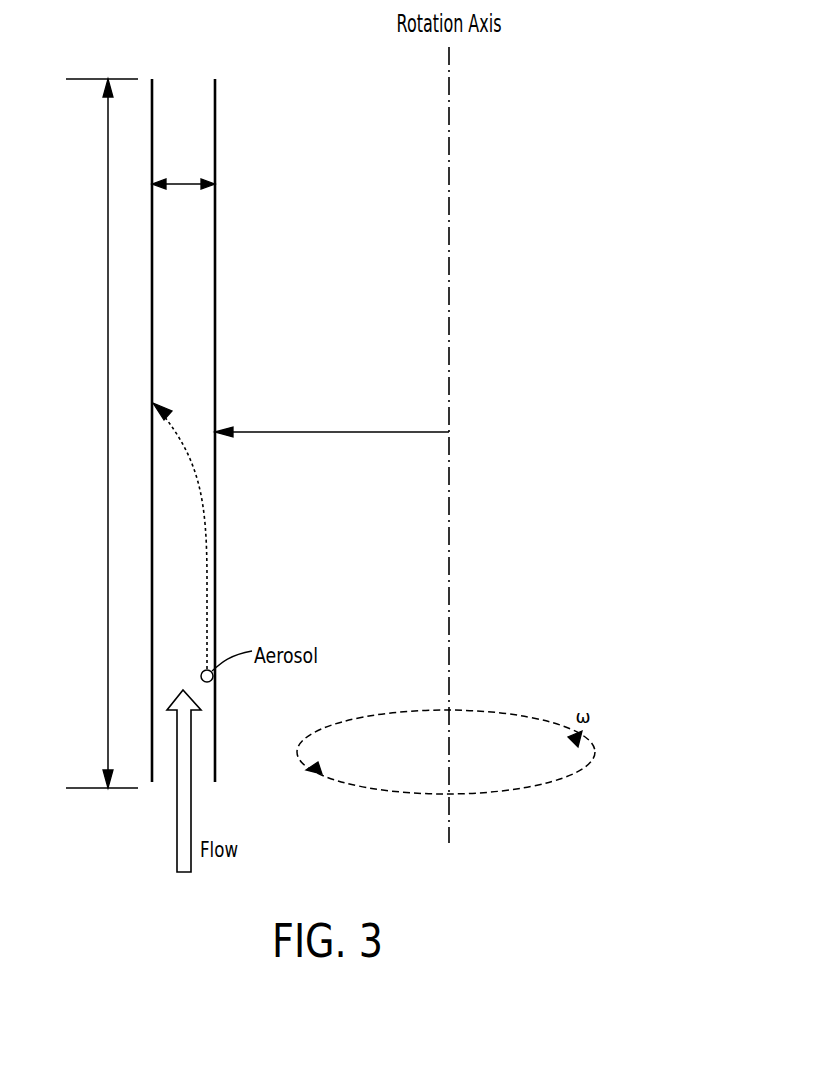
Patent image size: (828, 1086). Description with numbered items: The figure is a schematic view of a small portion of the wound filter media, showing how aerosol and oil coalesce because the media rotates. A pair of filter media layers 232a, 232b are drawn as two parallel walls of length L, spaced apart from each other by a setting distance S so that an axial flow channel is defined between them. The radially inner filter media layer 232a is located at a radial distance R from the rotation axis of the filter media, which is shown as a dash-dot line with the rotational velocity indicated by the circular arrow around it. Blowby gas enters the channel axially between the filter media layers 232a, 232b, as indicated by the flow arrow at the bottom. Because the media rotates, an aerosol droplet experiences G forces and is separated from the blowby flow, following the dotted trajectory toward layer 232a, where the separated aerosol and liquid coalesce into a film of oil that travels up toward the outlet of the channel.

The radially inner filter media layer 232a is at (152, 232).
The filter media layer 232b is at (215, 308).
The setting distance S is at (196, 185).
The length L is at (102, 433).
The radial distance R is at (332, 419).